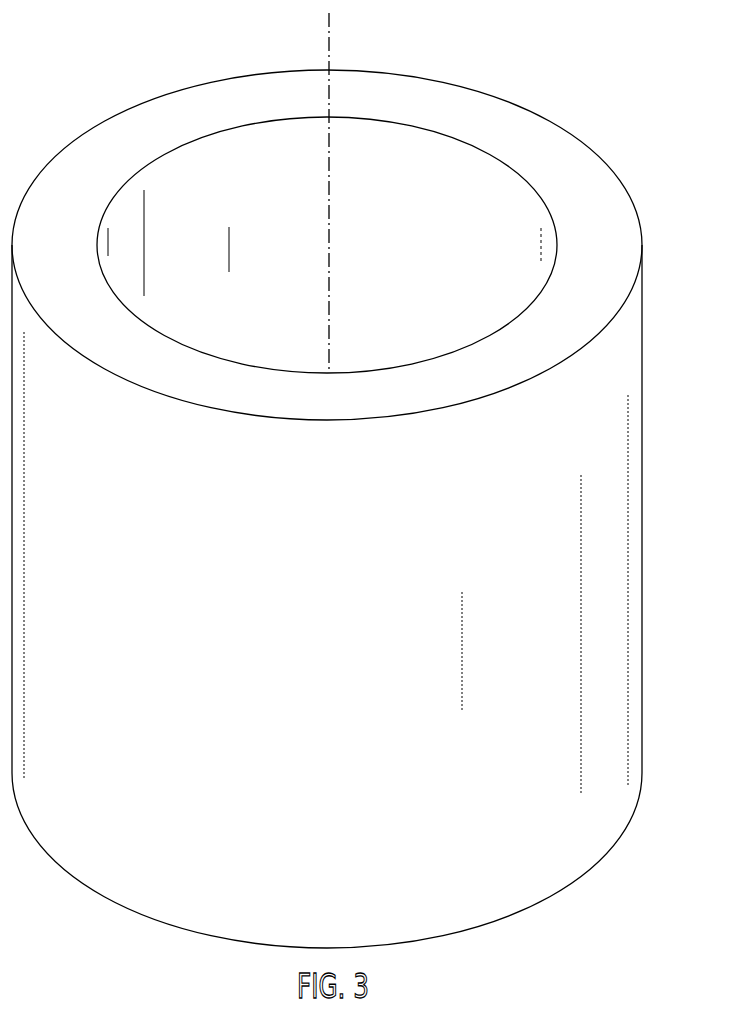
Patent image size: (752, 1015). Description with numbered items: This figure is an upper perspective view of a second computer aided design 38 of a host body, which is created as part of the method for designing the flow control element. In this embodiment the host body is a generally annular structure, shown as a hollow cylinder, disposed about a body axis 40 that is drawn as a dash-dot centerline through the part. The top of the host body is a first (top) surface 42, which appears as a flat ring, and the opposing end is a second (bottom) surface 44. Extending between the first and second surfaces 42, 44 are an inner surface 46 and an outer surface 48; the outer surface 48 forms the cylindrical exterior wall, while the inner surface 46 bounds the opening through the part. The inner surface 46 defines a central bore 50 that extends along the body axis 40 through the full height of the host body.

The second computer aided design 38 is at (354, 479).
The body axis 40 is at (330, 52).
The first (top) surface 42 is at (155, 127).
The second (bottom) surface 44 is at (578, 882).
The inner surface 46 is at (465, 153).
The outer surface 48 is at (610, 428).
The central bore 50 is at (297, 254).